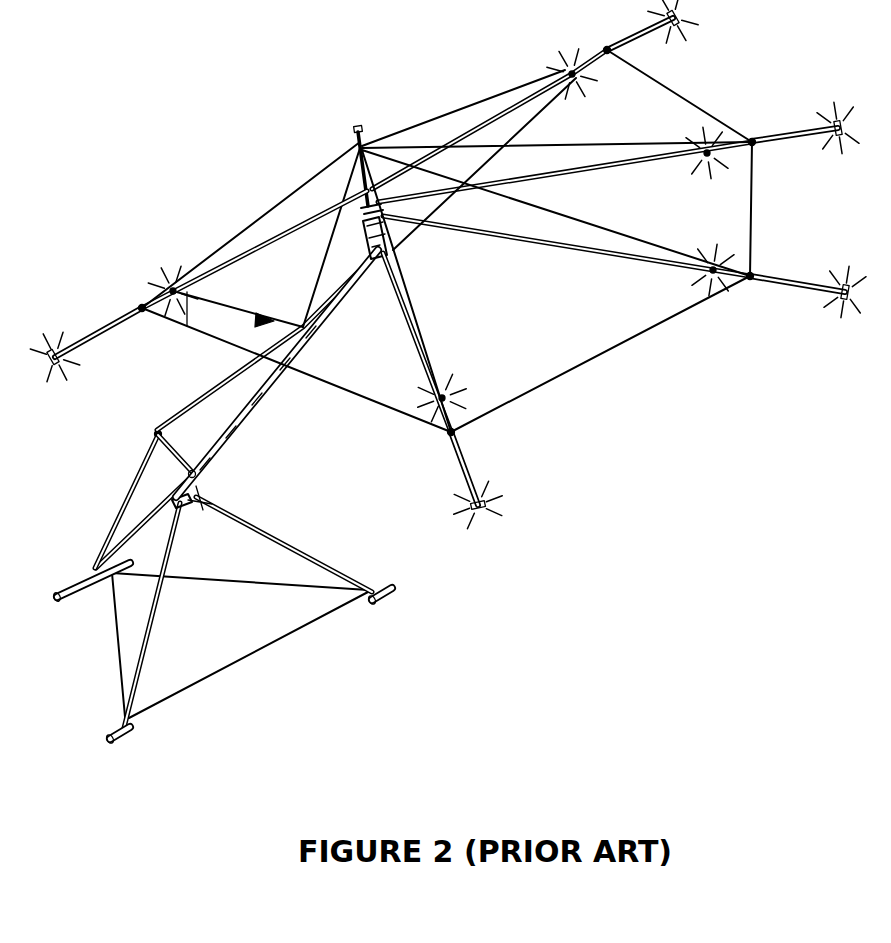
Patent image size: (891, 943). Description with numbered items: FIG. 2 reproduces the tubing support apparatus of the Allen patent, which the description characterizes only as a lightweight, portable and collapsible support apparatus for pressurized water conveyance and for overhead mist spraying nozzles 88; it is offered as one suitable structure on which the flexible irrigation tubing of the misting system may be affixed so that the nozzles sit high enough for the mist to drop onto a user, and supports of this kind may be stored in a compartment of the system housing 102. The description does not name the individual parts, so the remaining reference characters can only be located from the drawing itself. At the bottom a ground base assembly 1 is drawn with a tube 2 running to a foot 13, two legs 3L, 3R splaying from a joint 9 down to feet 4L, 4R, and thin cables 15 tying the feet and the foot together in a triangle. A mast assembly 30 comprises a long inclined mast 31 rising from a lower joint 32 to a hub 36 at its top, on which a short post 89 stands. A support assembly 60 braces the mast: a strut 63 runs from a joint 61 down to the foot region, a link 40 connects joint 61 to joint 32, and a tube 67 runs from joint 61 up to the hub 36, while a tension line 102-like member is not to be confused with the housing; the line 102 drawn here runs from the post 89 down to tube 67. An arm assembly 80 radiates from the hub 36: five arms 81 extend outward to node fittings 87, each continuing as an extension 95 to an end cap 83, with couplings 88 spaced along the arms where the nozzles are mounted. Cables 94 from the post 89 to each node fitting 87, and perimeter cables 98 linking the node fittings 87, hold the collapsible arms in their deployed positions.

The base frame 1 is at (241, 611).
The base tube 2 is at (134, 538).
The left leg 3L is at (309, 540).
The right leg 3R is at (148, 618).
The left foot 4L is at (394, 596).
The right foot 4R is at (133, 731).
The base joint 9 is at (185, 506).
The rear foot 13 is at (74, 600).
The base cables 15 is at (236, 580).
The mast assembly 30 is at (280, 311).
The mast 31 is at (250, 410).
The mast base joint 32 is at (198, 464).
The hub 36 is at (367, 242).
The link 40 is at (181, 456).
The support assembly 60 is at (222, 412).
The support joint 61 is at (155, 434).
The support strut 63 is at (136, 486).
The support tube 67 is at (208, 383).
The arm assembly 80 is at (454, 274).
The arm 81 is at (308, 230).
The arm end cap 83 is at (464, 279).
The arm node fitting 87 is at (144, 312).
The mist spraying nozzles 88 is at (182, 290).
The post 89 is at (354, 135).
The upper cable 94 is at (416, 122).
The arm extension 95 is at (96, 296).
The perimeter cable 98 is at (717, 102).
The housing 102 is at (310, 290).